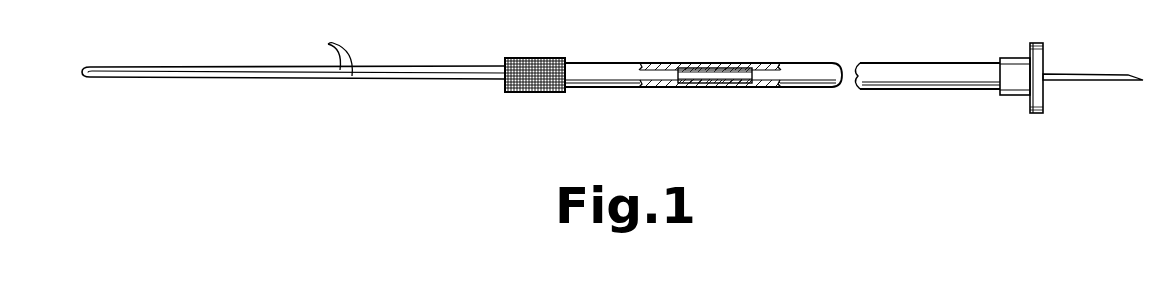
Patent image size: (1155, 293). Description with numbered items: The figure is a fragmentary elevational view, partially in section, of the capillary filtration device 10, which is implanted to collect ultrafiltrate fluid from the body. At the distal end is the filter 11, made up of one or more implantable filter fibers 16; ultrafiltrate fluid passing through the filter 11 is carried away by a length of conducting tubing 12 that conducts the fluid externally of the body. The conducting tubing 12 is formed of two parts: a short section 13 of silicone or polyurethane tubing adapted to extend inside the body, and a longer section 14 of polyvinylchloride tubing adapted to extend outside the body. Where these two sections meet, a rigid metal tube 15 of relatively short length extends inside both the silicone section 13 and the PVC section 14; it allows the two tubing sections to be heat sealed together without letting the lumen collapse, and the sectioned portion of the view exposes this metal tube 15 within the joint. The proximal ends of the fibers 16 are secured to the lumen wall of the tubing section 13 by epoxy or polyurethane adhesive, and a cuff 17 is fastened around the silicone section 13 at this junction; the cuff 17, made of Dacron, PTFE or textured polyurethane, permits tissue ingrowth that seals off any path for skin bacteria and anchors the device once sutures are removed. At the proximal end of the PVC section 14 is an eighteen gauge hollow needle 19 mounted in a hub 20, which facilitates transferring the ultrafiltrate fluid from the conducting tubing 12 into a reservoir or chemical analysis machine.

The capillary filtration device 10 is at (553, 120).
The filter 11 is at (297, 80).
The conducting tubing 12 is at (620, 63).
The short section of silicone or polyurethane tubing 13 is at (630, 70).
The longer section of PVC tubing 14 is at (830, 63).
The rigid metal tube 15 is at (732, 86).
The implantable filter fibers 16 is at (332, 56).
The cuff 17 is at (553, 59).
The hollow needle 19 is at (1118, 76).
The hub 20 is at (1045, 54).